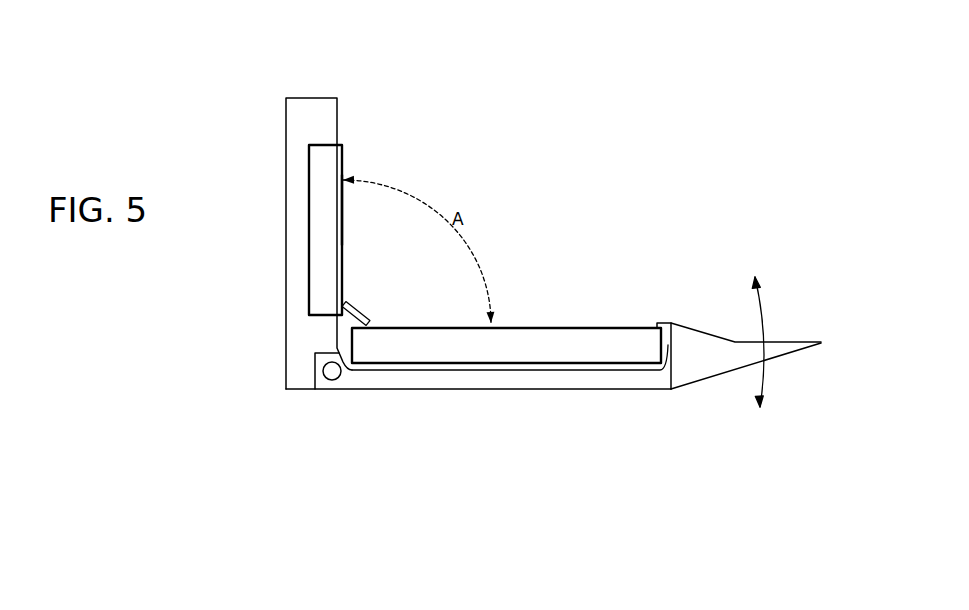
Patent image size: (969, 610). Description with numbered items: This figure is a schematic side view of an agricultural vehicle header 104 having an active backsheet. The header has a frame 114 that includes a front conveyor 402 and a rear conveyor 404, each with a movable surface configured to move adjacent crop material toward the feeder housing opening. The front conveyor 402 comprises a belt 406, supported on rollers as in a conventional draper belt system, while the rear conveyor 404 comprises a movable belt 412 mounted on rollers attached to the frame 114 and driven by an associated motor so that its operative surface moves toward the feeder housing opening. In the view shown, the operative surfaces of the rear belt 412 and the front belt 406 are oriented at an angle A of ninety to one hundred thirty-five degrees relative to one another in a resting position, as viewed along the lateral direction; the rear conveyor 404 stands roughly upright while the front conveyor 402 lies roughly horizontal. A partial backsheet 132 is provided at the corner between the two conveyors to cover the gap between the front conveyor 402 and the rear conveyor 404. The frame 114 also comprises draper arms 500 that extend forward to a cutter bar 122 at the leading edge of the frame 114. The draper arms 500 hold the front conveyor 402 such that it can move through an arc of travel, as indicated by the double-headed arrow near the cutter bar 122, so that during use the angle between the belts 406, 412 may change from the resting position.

The header 104 is at (592, 141).
The frame 114 is at (314, 110).
The cutter bar 122 is at (780, 355).
The partial backsheet 132 is at (343, 322).
The front conveyor 402 is at (592, 320).
The rear conveyor 404 is at (343, 144).
The belt 406 is at (528, 327).
The belt 412 is at (342, 212).
The draper arms 500 is at (495, 383).